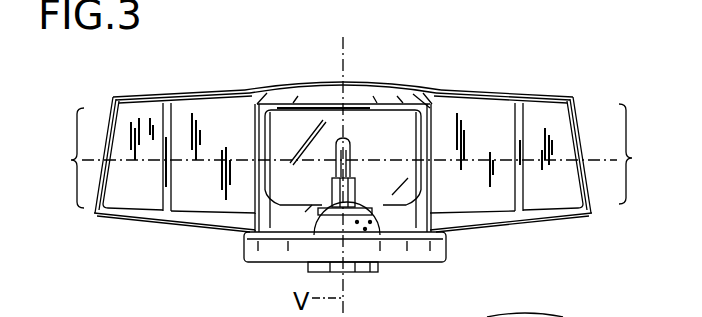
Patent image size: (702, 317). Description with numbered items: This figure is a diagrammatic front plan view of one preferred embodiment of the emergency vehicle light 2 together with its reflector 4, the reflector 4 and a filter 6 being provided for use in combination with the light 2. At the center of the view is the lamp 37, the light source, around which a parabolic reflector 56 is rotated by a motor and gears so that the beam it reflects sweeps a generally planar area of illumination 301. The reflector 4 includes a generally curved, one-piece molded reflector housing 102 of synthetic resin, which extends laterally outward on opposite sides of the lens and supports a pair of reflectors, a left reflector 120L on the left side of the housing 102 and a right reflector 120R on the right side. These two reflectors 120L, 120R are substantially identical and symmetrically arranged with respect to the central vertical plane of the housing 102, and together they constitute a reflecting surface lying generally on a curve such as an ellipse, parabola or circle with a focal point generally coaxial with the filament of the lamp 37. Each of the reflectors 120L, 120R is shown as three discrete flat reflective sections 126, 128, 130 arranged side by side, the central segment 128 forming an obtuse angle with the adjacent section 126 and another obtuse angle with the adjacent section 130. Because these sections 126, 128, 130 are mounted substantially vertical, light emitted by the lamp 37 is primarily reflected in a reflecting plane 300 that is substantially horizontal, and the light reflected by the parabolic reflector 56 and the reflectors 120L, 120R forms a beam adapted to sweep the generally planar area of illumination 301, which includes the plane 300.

The emergency vehicle light 2 is at (297, 276).
The reflector 4 is at (207, 85).
The filter 6 is at (333, 0).
The lamp 37 is at (352, 170).
The parabolic reflector 56 is at (385, 107).
The reflector housing 102 is at (523, 92).
The left reflector 120L is at (165, 232).
The right reflector 120R is at (470, 235).
The reflective section 126 is at (127, 200).
The central reflective segment 128 is at (172, 110).
The reflective section 130 is at (234, 107).
The reflecting plane 300 is at (516, 160).
The generally planar area of illumination 301 is at (356, 156).